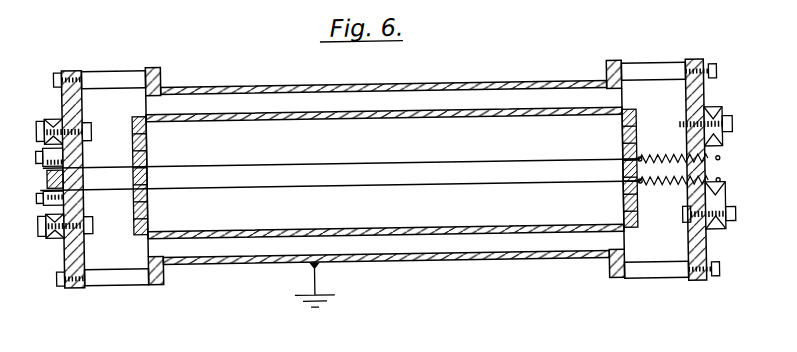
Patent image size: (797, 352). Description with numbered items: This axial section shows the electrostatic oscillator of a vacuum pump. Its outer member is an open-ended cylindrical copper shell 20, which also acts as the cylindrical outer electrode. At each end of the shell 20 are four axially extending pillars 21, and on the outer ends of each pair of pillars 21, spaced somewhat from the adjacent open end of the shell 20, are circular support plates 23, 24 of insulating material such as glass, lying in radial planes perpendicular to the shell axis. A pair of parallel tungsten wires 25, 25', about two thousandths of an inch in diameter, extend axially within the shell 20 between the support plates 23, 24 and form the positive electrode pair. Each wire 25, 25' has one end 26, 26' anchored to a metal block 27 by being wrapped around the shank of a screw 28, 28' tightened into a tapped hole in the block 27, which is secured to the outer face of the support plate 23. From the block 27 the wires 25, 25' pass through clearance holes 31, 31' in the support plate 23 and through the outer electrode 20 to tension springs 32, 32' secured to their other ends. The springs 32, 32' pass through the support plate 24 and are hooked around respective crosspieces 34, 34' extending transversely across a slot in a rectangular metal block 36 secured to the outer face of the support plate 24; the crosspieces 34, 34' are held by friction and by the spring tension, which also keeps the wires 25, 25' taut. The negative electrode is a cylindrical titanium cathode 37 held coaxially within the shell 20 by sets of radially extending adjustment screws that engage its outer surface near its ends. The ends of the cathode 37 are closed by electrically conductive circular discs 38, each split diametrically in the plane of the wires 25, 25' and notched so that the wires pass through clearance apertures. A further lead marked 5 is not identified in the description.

The casing 5 is at (520, 82).
The cylindrical copper shell 20 is at (266, 83).
The pillars 21 is at (122, 74).
The support plate 23 is at (83, 103).
The support plate 24 is at (690, 64).
The wire 25 is at (341, 153).
The wire 25' is at (340, 199).
The end of wire 26 is at (38, 170).
The end of wire 26' is at (36, 205).
The metal block 27 is at (50, 110).
The screw 28 is at (77, 132).
The screw 28' is at (76, 240).
The clearance hole 31 is at (383, 173).
The clearance hole 31' is at (400, 197).
The tension spring 32 is at (612, 151).
The tension spring 32' is at (613, 194).
The crosspiece 34 is at (691, 209).
The crosspiece 34' is at (686, 232).
The rectangular metal block 36 is at (713, 125).
The cylindrical cathode 37 is at (423, 114).
The circular discs 38 is at (149, 152).